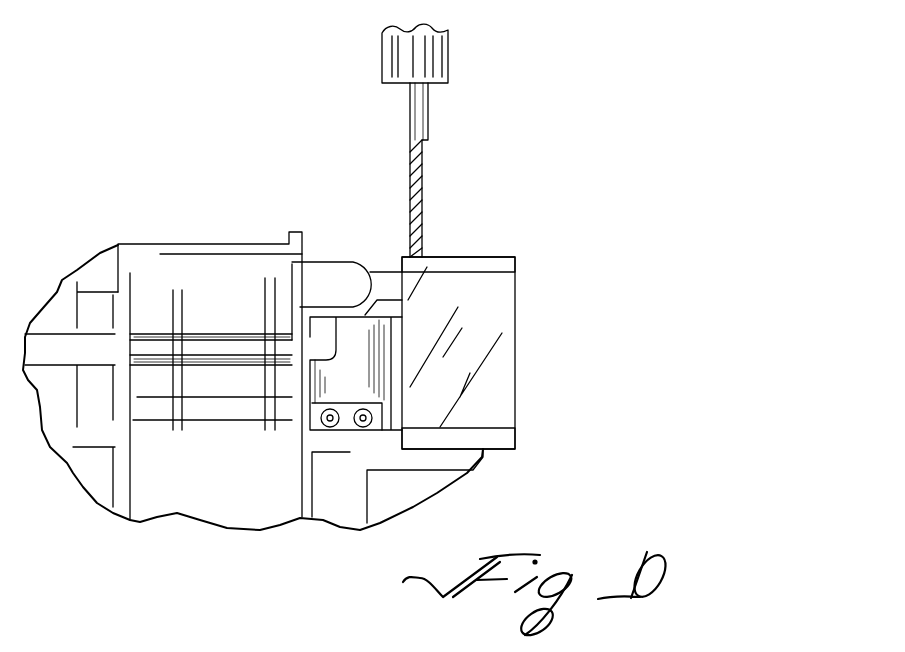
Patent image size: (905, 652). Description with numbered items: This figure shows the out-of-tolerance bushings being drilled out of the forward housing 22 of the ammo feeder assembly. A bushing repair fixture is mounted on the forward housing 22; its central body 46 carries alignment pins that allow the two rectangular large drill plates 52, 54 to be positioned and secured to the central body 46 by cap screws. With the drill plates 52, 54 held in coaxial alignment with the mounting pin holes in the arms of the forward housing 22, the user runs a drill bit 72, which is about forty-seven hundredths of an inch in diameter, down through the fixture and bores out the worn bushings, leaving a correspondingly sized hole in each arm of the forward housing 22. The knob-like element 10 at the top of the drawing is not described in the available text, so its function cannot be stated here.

The adjustment knob 10 is at (448, 55).
The forward housing 22 is at (142, 243).
The central body 46 is at (515, 347).
The drill plate 52 is at (515, 450).
The drill plate 54 is at (515, 262).
The drill bit 72 is at (423, 170).